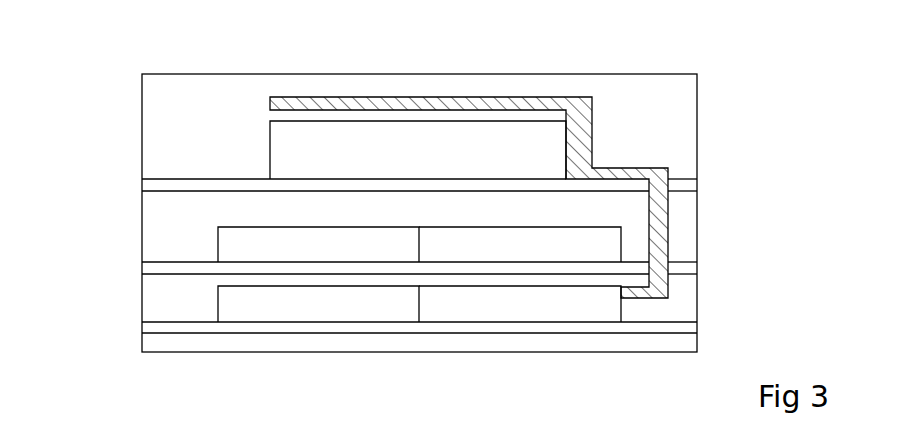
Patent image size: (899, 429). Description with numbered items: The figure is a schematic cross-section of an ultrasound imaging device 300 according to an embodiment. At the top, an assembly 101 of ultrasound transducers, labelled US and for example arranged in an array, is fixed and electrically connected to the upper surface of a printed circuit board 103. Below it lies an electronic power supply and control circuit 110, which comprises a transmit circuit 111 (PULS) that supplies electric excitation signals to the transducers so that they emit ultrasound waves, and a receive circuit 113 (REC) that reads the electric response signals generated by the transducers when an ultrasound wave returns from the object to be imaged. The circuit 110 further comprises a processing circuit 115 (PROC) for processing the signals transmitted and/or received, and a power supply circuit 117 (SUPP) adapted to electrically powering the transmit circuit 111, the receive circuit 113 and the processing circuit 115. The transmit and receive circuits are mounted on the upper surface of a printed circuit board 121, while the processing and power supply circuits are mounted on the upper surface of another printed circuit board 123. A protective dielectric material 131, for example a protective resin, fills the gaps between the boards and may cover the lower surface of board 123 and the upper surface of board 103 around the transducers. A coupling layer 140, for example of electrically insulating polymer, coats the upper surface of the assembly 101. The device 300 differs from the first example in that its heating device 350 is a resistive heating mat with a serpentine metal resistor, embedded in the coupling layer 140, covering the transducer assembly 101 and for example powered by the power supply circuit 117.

The ultrasound imaging device 300 is at (142, 56).
The heating device 350 is at (549, 88).
The coupling layer 140 is at (657, 97).
The assembly of ultrasound transducers 101 is at (553, 147).
The printed circuit board 103 is at (685, 185).
The protective dielectric material 131 is at (158, 213).
The transmit circuit 111 is at (235, 244).
The receive circuit 113 is at (588, 245).
The electronic power supply and control circuit 110 is at (95, 277).
The printed circuit board 121 is at (682, 268).
The processing circuit 115 is at (235, 296).
The power supply circuit 117 is at (600, 312).
The printed circuit board 123 is at (685, 327).